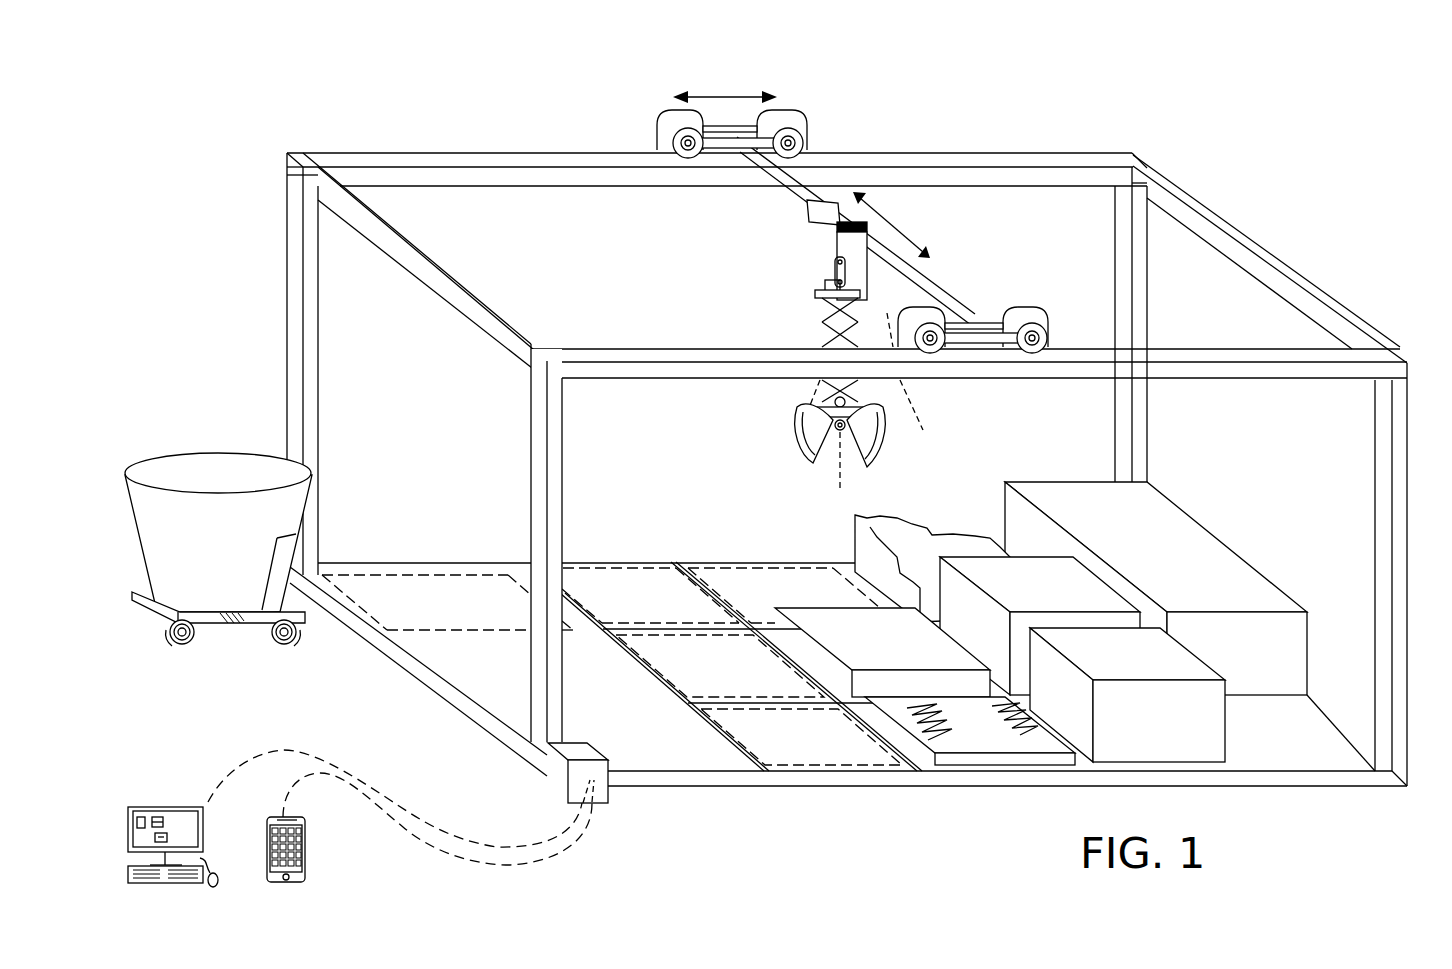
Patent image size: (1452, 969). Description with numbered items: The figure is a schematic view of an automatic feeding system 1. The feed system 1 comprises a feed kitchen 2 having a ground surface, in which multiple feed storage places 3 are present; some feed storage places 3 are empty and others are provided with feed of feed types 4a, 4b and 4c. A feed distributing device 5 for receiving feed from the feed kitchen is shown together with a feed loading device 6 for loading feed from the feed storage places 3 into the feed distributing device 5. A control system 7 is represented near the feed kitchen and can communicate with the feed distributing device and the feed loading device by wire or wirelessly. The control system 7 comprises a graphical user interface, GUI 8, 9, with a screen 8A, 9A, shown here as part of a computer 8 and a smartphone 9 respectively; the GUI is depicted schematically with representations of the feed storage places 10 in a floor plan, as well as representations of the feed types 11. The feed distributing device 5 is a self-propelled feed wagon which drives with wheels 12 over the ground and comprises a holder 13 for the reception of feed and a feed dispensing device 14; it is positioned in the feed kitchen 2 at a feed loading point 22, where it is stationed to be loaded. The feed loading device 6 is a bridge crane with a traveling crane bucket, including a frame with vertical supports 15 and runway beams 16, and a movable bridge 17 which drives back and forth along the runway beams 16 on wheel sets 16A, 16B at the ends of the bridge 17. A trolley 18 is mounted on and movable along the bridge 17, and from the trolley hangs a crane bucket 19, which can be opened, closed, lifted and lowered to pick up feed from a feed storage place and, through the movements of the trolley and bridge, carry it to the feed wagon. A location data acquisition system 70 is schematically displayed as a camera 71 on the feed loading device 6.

The automatic feeding system 1 is at (791, 404).
The feed kitchen 2 is at (868, 404).
The feed storage places 3 is at (934, 630).
The feed type 4a is at (916, 729).
The feed type 4b is at (927, 540).
The feed type 4c is at (1145, 510).
The feed distributing device 5 is at (226, 504).
The feed loading device 6 is at (805, 291).
The control system 7 is at (556, 777).
The computer 8 is at (242, 830).
The screen 8A is at (242, 830).
The smartphone 9 is at (336, 839).
The screen 9A is at (305, 841).
The representations of the feed storage places 10 is at (157, 822).
The representations of the feed types 11 is at (165, 838).
The wheels 12 is at (283, 642).
The holder 13 is at (166, 513).
The feed dispensing device 14 is at (277, 585).
The vertical supports 15 is at (1399, 442).
The runway beams 16 is at (390, 158).
The wheel set 16A is at (672, 128).
The wheel set 16B is at (1014, 318).
The movable bridge 17 is at (786, 188).
The trolley 18 is at (834, 211).
The crane bucket 19 is at (806, 428).
The feed loading point 22 is at (462, 616).
The location data acquisition system 70 is at (788, 331).
The camera 71 is at (859, 287).